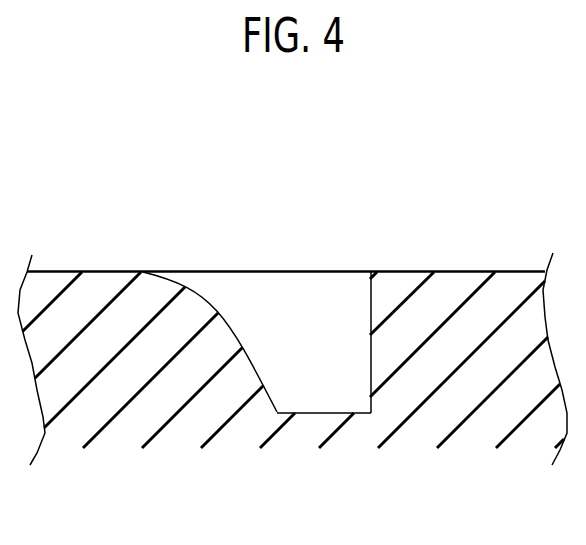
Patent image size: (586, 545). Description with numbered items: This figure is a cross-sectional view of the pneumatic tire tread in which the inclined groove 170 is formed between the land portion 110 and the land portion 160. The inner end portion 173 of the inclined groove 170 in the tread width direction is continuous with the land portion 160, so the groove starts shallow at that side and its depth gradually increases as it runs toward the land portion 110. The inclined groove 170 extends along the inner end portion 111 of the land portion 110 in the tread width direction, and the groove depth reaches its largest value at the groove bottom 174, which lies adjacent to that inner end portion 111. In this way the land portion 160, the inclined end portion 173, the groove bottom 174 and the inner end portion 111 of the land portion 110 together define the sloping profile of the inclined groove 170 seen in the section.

The land portion 110 is at (463, 271).
The inner end portion of the land portion 111 is at (371, 295).
The land portion 160 is at (108, 271).
The inclined groove 170 is at (268, 342).
The inner end portion of the inclined groove 173 is at (193, 283).
The groove bottom 174 is at (312, 414).